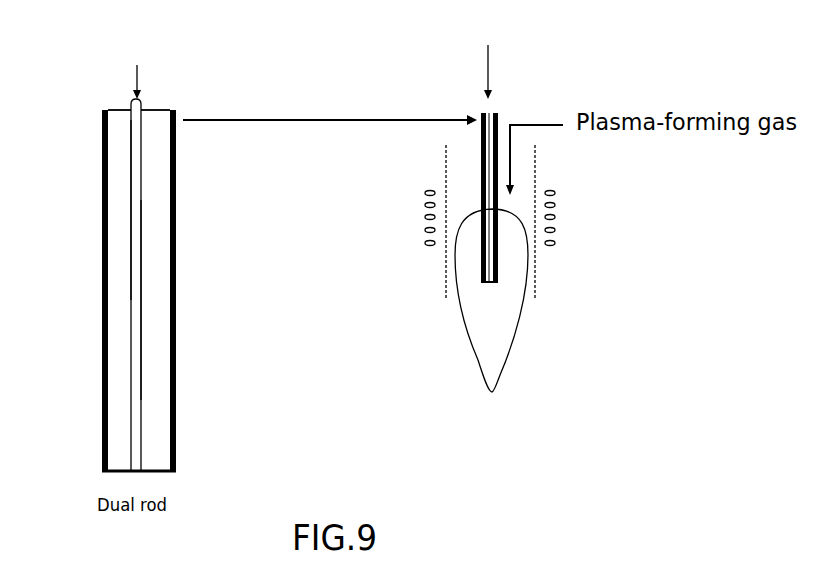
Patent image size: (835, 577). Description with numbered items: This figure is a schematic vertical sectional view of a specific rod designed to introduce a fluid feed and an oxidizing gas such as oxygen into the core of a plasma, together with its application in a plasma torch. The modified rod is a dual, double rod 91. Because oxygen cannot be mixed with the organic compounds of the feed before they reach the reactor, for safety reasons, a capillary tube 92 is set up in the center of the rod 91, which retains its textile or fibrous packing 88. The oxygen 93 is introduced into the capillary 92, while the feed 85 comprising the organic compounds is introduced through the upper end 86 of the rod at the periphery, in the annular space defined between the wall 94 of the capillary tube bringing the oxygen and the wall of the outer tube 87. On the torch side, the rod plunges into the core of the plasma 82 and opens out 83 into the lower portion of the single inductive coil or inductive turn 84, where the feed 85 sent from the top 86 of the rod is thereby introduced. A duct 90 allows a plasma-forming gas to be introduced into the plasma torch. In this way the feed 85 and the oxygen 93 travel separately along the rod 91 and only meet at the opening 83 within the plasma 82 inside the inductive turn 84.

The plasma 82 is at (531, 344).
The rod opening 83 is at (492, 282).
The inductive turn 84 is at (566, 213).
The feed 85 is at (114, 100).
The top of the rod 86 is at (155, 110).
The tube 87 is at (96, 338).
The textile or fibrous packing 88 is at (119, 392).
The duct 90 is at (432, 173).
The dual rod 91 is at (199, 408).
The capillary tube 92 is at (136, 166).
The oxygen 93 is at (313, 60).
The wall of the capillary tube 94 is at (141, 254).